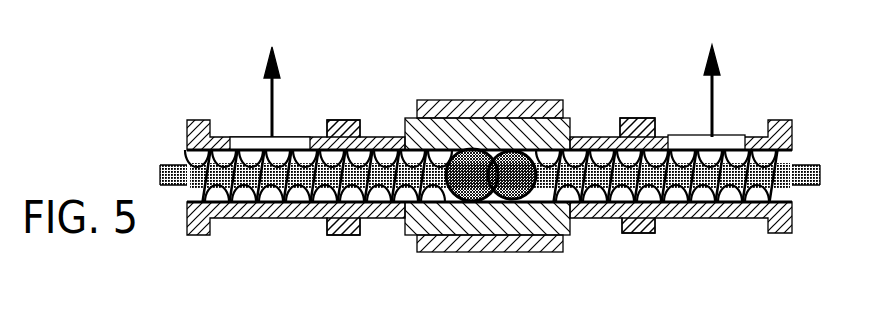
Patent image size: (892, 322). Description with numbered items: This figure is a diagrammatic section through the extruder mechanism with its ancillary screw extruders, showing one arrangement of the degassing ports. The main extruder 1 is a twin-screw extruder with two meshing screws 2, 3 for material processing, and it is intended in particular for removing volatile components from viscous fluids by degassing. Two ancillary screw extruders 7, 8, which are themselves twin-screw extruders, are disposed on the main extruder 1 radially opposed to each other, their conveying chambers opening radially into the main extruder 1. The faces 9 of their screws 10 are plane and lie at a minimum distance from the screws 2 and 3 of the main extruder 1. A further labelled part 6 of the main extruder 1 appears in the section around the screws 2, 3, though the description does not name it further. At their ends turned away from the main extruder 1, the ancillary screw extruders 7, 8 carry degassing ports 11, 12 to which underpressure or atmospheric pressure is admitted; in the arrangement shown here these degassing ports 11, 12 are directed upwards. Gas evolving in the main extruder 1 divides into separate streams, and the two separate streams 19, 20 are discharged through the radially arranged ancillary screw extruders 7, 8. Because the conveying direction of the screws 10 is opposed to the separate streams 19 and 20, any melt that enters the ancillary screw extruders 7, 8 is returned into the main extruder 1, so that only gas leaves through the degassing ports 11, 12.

The main extruder 1 is at (441, 80).
The screw 2 is at (473, 160).
The screw 3 is at (510, 165).
The housing ring 6 is at (537, 142).
The ancillary screw extruder 7 is at (283, 222).
The ancillary screw extruder 8 is at (727, 222).
The faces 9 is at (423, 187).
The screws 10 is at (355, 137).
The degassing port 11 is at (293, 137).
The degassing port 12 is at (685, 140).
The separate stream 19 is at (270, 108).
The separate stream 20 is at (713, 100).